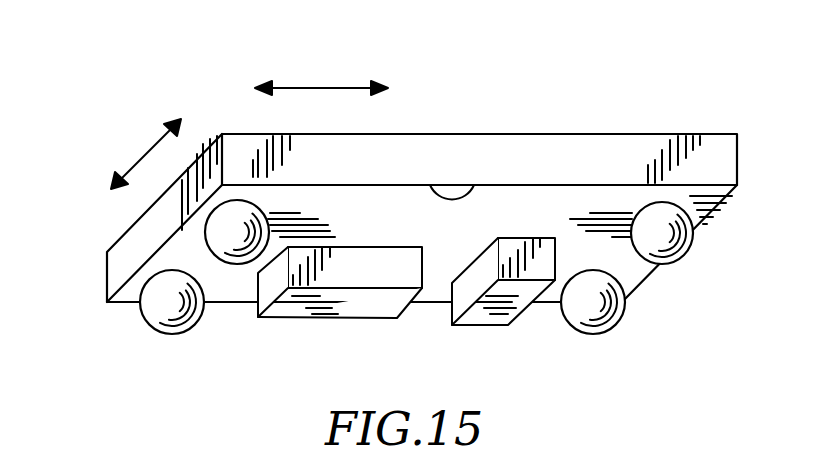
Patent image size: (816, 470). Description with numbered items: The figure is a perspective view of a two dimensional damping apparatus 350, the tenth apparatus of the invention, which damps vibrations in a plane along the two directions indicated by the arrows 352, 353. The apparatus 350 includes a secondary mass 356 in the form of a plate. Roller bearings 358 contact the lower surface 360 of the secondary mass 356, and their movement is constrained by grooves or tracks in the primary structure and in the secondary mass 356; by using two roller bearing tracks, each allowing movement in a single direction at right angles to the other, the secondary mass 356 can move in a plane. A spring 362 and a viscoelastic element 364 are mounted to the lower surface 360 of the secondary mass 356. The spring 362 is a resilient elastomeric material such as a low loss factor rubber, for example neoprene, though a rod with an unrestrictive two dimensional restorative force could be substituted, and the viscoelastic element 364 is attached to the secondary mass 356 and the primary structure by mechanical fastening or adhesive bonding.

The two dimensional damping apparatus 350 is at (655, 72).
The arrow 352 is at (335, 88).
The arrow 353 is at (148, 150).
The secondary mass 356 is at (528, 134).
The roller bearings 358 is at (623, 323).
The lower surface 360 is at (474, 185).
The spring 362 is at (298, 318).
The viscoelastic element 364 is at (487, 325).